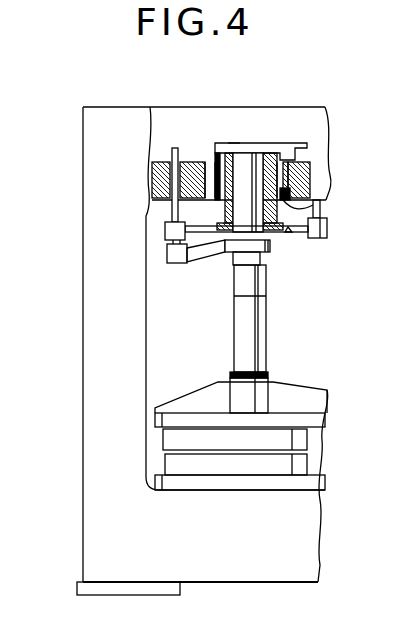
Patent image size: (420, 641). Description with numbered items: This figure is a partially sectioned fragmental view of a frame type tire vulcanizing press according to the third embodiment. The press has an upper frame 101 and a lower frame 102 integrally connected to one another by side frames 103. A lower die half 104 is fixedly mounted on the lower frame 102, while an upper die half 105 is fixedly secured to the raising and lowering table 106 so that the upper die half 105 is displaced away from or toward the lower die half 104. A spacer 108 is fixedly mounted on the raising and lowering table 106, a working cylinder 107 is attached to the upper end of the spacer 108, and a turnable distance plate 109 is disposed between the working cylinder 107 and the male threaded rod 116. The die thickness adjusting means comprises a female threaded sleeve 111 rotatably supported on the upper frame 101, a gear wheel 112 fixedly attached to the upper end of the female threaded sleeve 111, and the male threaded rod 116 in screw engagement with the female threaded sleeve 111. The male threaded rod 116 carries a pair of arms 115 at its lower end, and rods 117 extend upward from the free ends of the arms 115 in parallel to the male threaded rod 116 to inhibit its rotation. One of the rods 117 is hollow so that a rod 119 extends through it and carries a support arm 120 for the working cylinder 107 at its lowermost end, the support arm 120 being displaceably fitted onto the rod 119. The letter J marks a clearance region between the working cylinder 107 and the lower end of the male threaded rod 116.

The upper frame 101 is at (122, 112).
The lower frame 102 is at (237, 584).
The side frames 103 is at (83, 317).
The lower die half 104 is at (163, 462).
The upper die half 105 is at (163, 441).
The raising and lowering table 106 is at (187, 392).
The working cylinder 107 is at (271, 244).
The spacer 108 is at (267, 334).
The turnable distance plate 109 is at (222, 251).
The female threaded sleeve 111 is at (325, 203).
The gear wheel 112 is at (196, 132).
The arms 115 is at (328, 236).
The male threaded rod 116 is at (232, 148).
The rods 117 is at (323, 212).
The rod 119 is at (165, 130).
The support arm 120 is at (200, 262).
The gap J is at (233, 126).